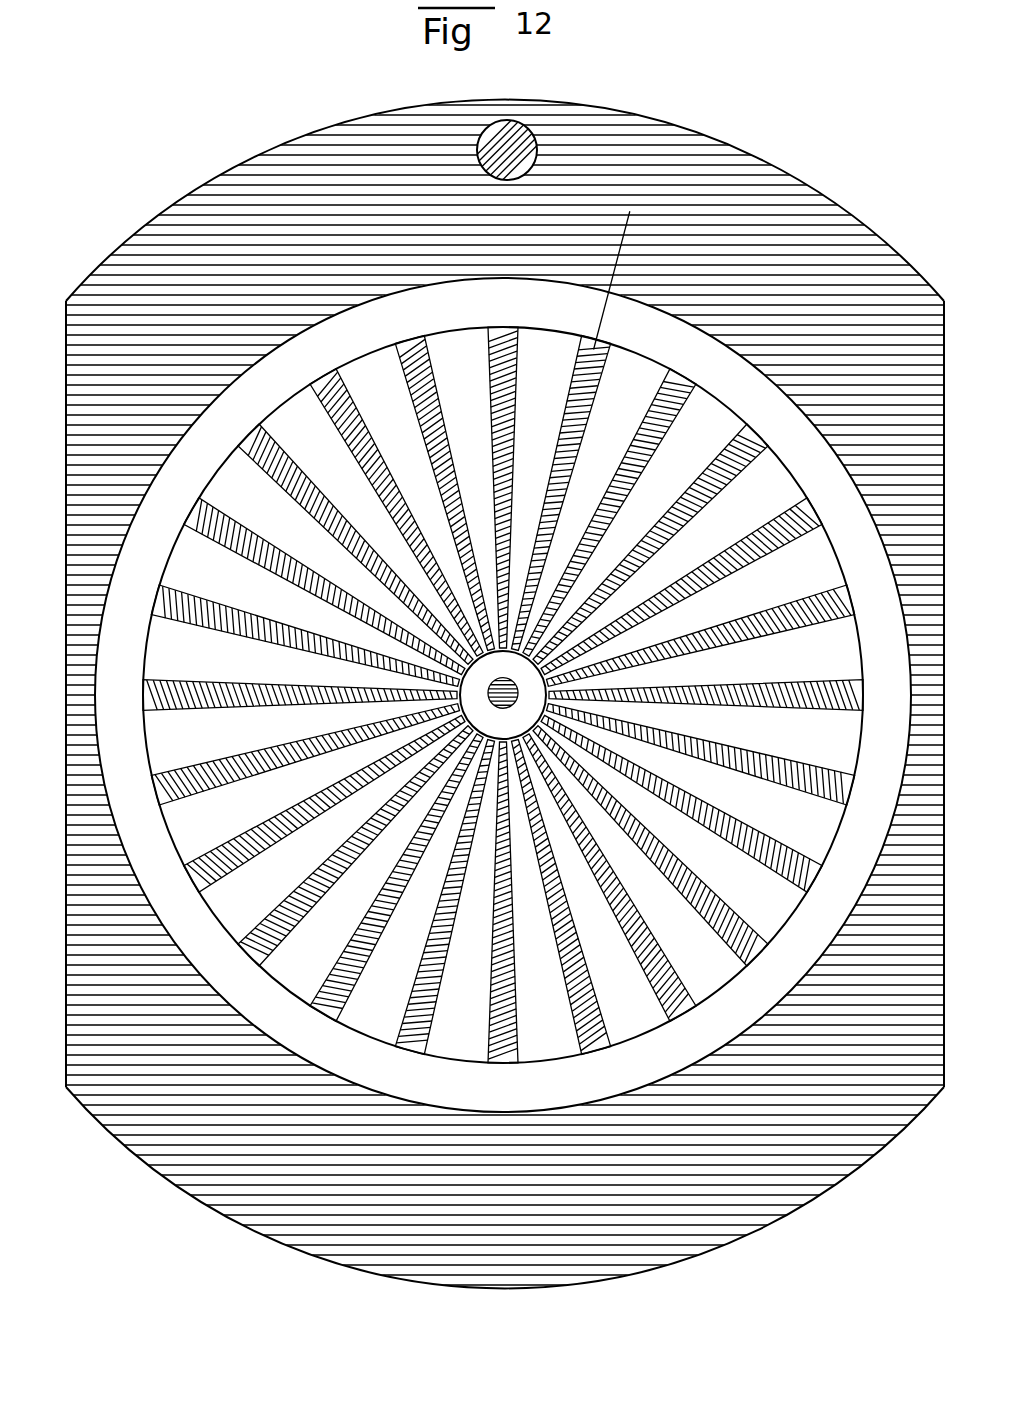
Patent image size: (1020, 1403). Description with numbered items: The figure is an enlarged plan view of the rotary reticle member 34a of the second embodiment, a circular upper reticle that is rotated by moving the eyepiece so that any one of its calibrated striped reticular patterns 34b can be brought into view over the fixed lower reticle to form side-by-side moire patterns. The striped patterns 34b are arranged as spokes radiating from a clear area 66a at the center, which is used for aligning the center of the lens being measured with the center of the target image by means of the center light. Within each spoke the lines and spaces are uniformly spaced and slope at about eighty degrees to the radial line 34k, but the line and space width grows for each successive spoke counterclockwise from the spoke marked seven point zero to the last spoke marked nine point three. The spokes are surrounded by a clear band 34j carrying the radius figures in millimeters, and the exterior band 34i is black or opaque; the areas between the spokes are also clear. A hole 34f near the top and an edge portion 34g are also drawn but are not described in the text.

The rotary reticle member 34a is at (247, 130).
The calibrated striped reticular patterns 34b is at (682, 498).
The mounting hole 34f is at (497, 146).
The upper edge of dial plate 34g is at (807, 190).
The exterior band 34i is at (223, 1163).
The band containing the radius figures 34j is at (270, 372).
The radial line 34k is at (624, 250).
The clear area 66a is at (475, 683).